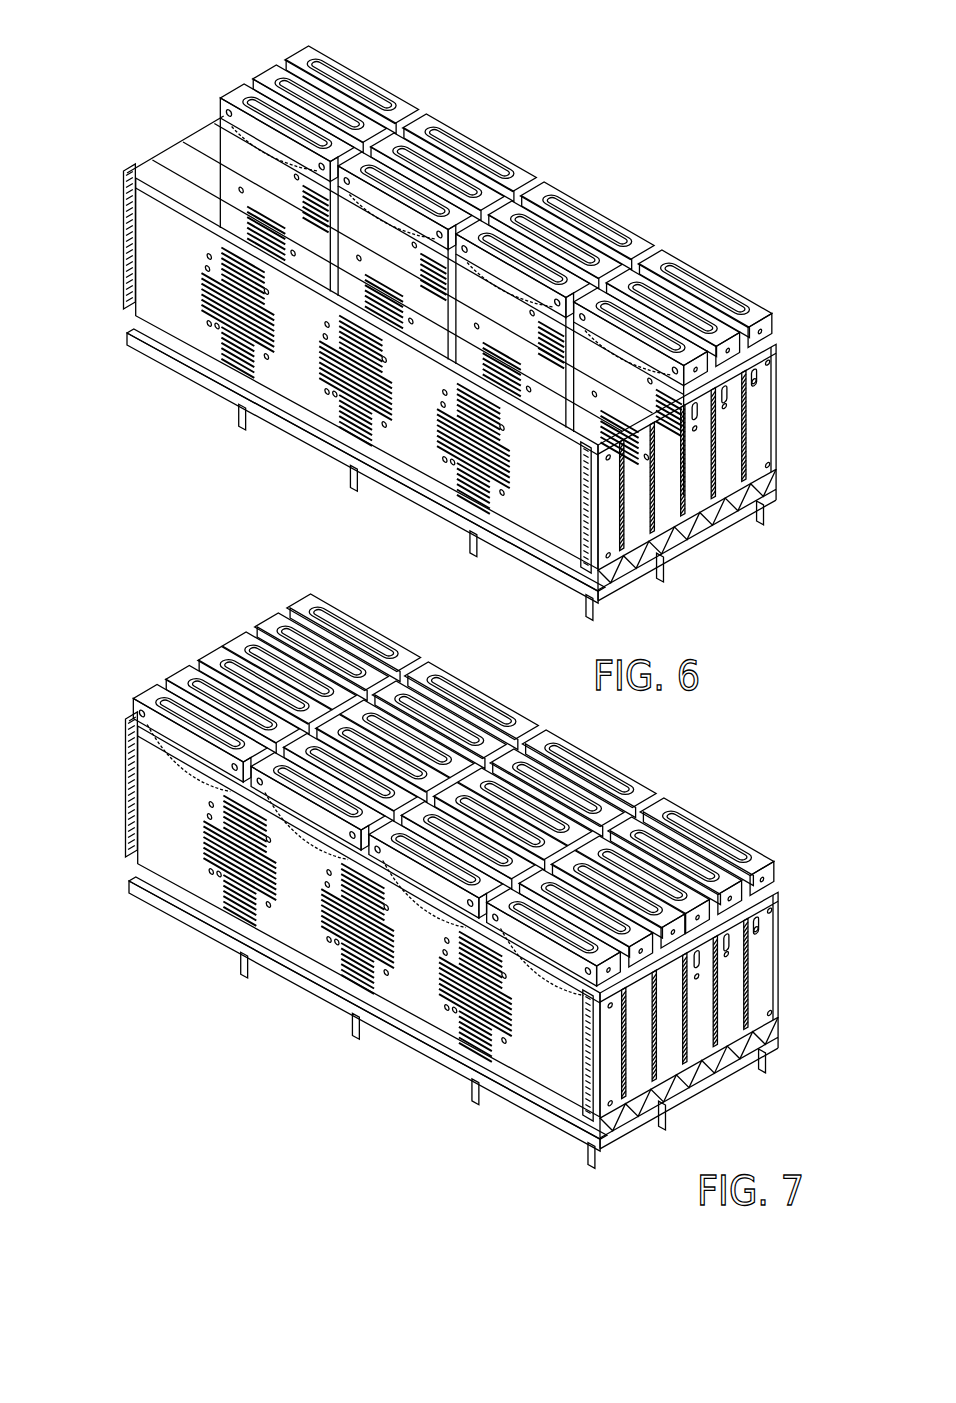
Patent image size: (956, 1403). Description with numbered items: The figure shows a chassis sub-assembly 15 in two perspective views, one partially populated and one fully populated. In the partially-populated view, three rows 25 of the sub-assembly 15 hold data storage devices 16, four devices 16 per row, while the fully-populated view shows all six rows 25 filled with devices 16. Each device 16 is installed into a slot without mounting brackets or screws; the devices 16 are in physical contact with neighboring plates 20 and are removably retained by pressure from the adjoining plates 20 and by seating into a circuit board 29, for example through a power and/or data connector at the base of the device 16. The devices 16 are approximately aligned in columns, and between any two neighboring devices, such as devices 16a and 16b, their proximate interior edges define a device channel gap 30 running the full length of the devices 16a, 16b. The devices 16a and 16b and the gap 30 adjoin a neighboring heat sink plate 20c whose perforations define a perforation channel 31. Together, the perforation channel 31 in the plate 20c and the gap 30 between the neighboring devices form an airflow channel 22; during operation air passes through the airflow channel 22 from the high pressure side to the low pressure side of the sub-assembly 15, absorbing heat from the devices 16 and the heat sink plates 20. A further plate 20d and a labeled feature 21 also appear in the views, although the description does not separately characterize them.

In FIG. 6, the chassis sub-assembly 15 is at (458, 368).
In FIG. 7, the chassis sub-assembly 15 is at (452, 890).
In FIG. 6, the data storage device 16 is at (498, 278).
In FIG. 7, the data storage device 16 is at (412, 657).
In FIG. 6, the device 16a is at (548, 257).
In FIG. 6, the device 16b is at (672, 335).
In FIG. 6, the heat sink plate 20 is at (478, 415).
In FIG. 7, the heat sink plate 20 is at (452, 987).
In FIG. 6, the heat sink plate 20c is at (652, 393).
In FIG. 6, the support post 20d is at (718, 440).
In FIG. 6, the side panel 21 is at (359, 381).
In FIG. 7, the side panel 21 is at (357, 933).
In FIG. 6, the airflow channel 22 is at (543, 192).
In FIG. 7, the airflow channel 22 is at (362, 855).
In FIG. 6, the row 25 is at (254, 162).
In FIG. 6, the circuit board 29 is at (613, 592).
In FIG. 7, the circuit board 29 is at (625, 1138).
In FIG. 6, the device channel gap 30 is at (589, 281).
In FIG. 6, the perforation channel 31 is at (562, 315).